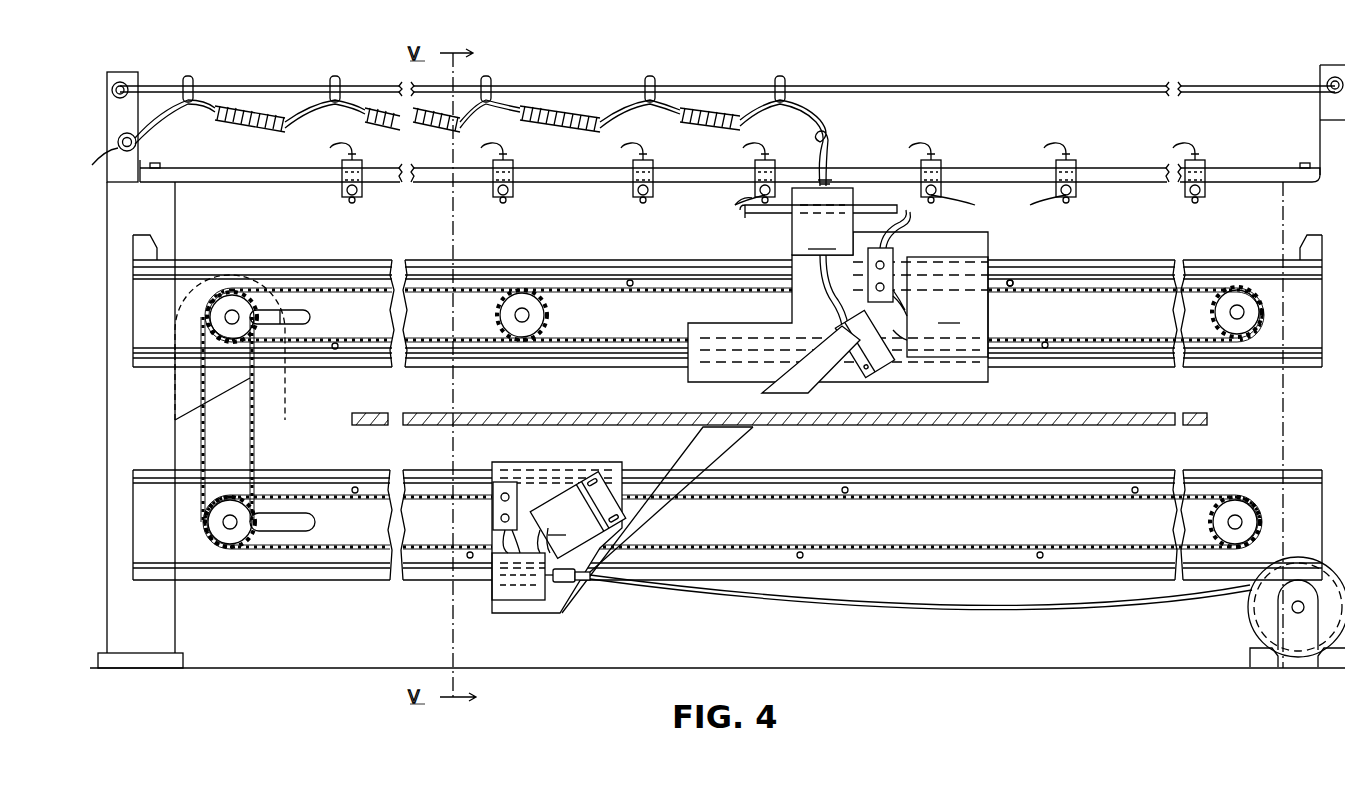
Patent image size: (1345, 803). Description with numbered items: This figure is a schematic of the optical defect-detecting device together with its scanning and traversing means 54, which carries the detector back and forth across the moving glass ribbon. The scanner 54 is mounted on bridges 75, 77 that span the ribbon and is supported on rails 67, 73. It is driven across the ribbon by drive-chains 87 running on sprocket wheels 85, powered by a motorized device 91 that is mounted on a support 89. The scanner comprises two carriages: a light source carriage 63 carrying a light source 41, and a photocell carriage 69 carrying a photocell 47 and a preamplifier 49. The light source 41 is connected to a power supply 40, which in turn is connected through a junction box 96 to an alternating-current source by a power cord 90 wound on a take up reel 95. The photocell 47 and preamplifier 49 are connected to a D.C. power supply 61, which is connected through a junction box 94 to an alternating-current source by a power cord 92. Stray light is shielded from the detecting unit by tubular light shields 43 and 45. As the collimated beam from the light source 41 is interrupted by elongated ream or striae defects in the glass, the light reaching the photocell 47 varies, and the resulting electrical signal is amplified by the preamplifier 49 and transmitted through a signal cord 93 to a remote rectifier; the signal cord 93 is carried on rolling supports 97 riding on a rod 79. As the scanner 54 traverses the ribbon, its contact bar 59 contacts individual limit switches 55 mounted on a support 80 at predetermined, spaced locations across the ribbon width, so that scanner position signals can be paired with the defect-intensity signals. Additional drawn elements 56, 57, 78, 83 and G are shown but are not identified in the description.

The power supply 40 is at (514, 606).
The light source 41 is at (577, 515).
The tubular light shield 43 is at (722, 440).
The tubular light shield 45 is at (834, 384).
The photocell 47 is at (880, 384).
The preamplifier 49 is at (822, 253).
The scanning and traversing means 54 is at (1074, 243).
The limit switches 55 is at (512, 190).
The end connector 56 is at (1206, 190).
The first connector 57 is at (342, 192).
The contact bar 59 is at (745, 214).
The D.C. power supply 61 is at (947, 307).
The light source carriage 63 is at (562, 604).
The rail 67 is at (446, 470).
The photocell carriage 69 is at (982, 378).
The rail 73 is at (372, 268).
The bridge 75 is at (133, 302).
The bridge 77 is at (133, 526).
The eye ring 78 is at (140, 73).
The rod 79 is at (966, 84).
The support 80 is at (1258, 168).
The upright support 83 is at (1283, 410).
The sprocket wheels 85 is at (222, 317).
The drive-chains 87 is at (1040, 292).
The support 89 is at (270, 376).
The power cord 90 is at (934, 616).
The motorized device 91 is at (306, 320).
The power cord 92 is at (910, 220).
The signal cord 93 is at (826, 115).
The junction box 94 is at (896, 252).
The take up reel 95 is at (1244, 629).
The junction box 96 is at (492, 512).
The rolling supports 97 is at (332, 82).
The guide bar G is at (546, 414).